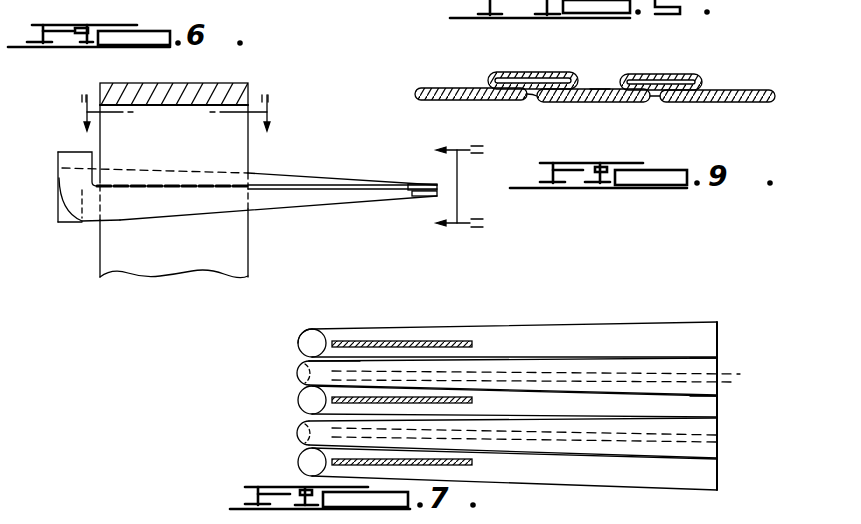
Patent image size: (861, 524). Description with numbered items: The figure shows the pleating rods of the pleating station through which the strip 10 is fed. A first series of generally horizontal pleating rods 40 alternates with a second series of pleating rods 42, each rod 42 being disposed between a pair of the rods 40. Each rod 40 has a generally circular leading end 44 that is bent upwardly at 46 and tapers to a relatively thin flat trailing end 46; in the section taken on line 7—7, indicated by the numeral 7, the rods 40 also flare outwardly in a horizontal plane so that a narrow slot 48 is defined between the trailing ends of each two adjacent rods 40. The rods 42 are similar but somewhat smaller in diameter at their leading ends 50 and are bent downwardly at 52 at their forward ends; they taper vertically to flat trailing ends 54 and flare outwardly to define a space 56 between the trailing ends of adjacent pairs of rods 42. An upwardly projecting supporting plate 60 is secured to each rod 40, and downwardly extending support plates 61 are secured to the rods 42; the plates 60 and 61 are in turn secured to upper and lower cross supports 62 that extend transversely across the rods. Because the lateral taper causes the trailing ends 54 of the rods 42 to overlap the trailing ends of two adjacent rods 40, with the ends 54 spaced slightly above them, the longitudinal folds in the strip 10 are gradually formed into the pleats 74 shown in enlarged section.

In FIG. 6, the section line 7— 7 is at (170, 116).
In FIG. 6, the strip 10 is at (456, 189).
In FIG. 9, the strip 10 is at (730, 118).
In FIG. 6, the pleating rods 40 is at (207, 217).
In FIG. 7, the pleating rods 40 is at (290, 338).
In FIG. 6, the pleating rods 42 is at (280, 170).
In FIG. 7, the pleating rods 42 is at (290, 372).
In FIG. 6, the leading end 44 is at (120, 219).
In FIG. 7, the leading end 44 is at (333, 326).
In FIG. 6, the trailing end 46 is at (60, 159).
In FIG. 9, the trailing end 46 is at (578, 101).
In FIG. 7, the trailing end 46 is at (693, 333).
In FIG. 9, the slot 48 is at (528, 101).
In FIG. 7, the slot 48 is at (549, 406).
In FIG. 6, the leading end 50 is at (97, 167).
In FIG. 7, the leading end 50 is at (337, 360).
In FIG. 6, the downward bend 52 is at (80, 222).
In FIG. 6, the trailing end 54 is at (415, 182).
In FIG. 9, the trailing end 54 is at (540, 56).
In FIG. 7, the trailing end 54 is at (710, 363).
In FIG. 9, the space 56 is at (597, 82).
In FIG. 7, the space 56 is at (700, 401).
In FIG. 6, the supporting plate 60 is at (214, 139).
In FIG. 7, the supporting plate 60 is at (393, 341).
In FIG. 6, the support plate 61 is at (232, 243).
In FIG. 7, the support plate 61 is at (452, 370).
In FIG. 6, the cross support 62 is at (238, 84).
In FIG. 9, the pleats 74 is at (547, 72).